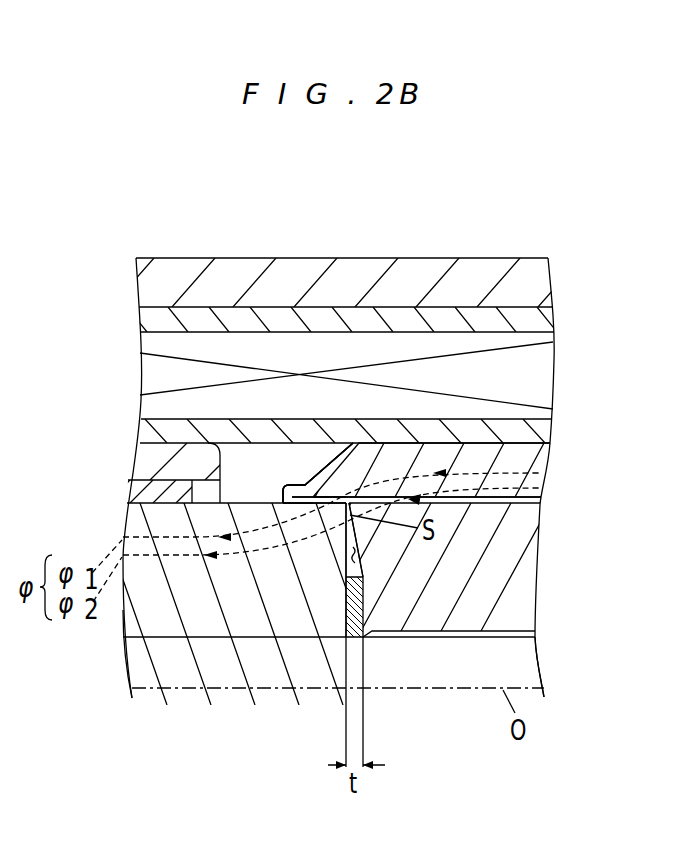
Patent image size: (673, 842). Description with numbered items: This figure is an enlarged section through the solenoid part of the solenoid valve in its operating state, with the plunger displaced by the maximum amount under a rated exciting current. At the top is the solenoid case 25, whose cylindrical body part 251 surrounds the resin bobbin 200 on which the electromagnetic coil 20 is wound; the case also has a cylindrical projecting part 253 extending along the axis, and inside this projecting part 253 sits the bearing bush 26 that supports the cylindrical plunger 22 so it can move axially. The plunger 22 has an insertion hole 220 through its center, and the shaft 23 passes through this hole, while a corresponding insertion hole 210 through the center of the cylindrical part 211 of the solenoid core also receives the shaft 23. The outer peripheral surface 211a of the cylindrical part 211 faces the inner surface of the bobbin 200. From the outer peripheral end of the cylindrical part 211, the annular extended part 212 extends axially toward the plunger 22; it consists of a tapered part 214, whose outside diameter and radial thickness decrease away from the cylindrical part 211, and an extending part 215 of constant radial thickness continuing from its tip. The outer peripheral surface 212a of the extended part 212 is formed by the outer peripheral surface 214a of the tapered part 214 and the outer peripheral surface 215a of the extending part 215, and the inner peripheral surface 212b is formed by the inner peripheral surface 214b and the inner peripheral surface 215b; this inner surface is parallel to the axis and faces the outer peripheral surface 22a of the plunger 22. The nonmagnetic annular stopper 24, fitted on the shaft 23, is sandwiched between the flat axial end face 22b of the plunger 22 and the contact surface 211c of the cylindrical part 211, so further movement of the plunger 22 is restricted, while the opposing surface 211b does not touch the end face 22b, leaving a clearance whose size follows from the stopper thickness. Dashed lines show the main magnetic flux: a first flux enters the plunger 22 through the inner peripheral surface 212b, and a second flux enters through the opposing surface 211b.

The solenoid case 25 is at (375, 258).
The cylindrical body part 251 is at (153, 290).
The bobbin 200 is at (152, 323).
The electromagnetic coil 20 is at (153, 376).
The projecting part 253 is at (152, 463).
The bearing bush 26 is at (143, 498).
The outer peripheral surface of the plunger 22a is at (147, 505).
The plunger 22 is at (162, 582).
The insertion hole 220 is at (160, 637).
The shaft 23 is at (515, 670).
The insertion hole 210 is at (455, 633).
The stopper 24 is at (345, 640).
The contact surface 211c is at (370, 602).
The opposing surface 211b is at (360, 540).
The cylindrical part 211 is at (493, 572).
The outer peripheral surface of the cylindrical part 211a is at (422, 443).
The tapered part 214 is at (542, 457).
The extending part 215 is at (540, 500).
The extended part 212 is at (612, 446).
The outer peripheral surface of the extended part 212a is at (337, 214).
The outer peripheral surface of the extending part 215a is at (285, 485).
The outer peripheral surface of the tapered part 214a is at (331, 442).
The inner peripheral surface of the extending part 215b is at (288, 503).
The inner peripheral surface of the tapered part 214b is at (338, 497).
The axial end face of the plunger 22b is at (346, 578).
The inner peripheral surface of the extended part 212b is at (240, 740).